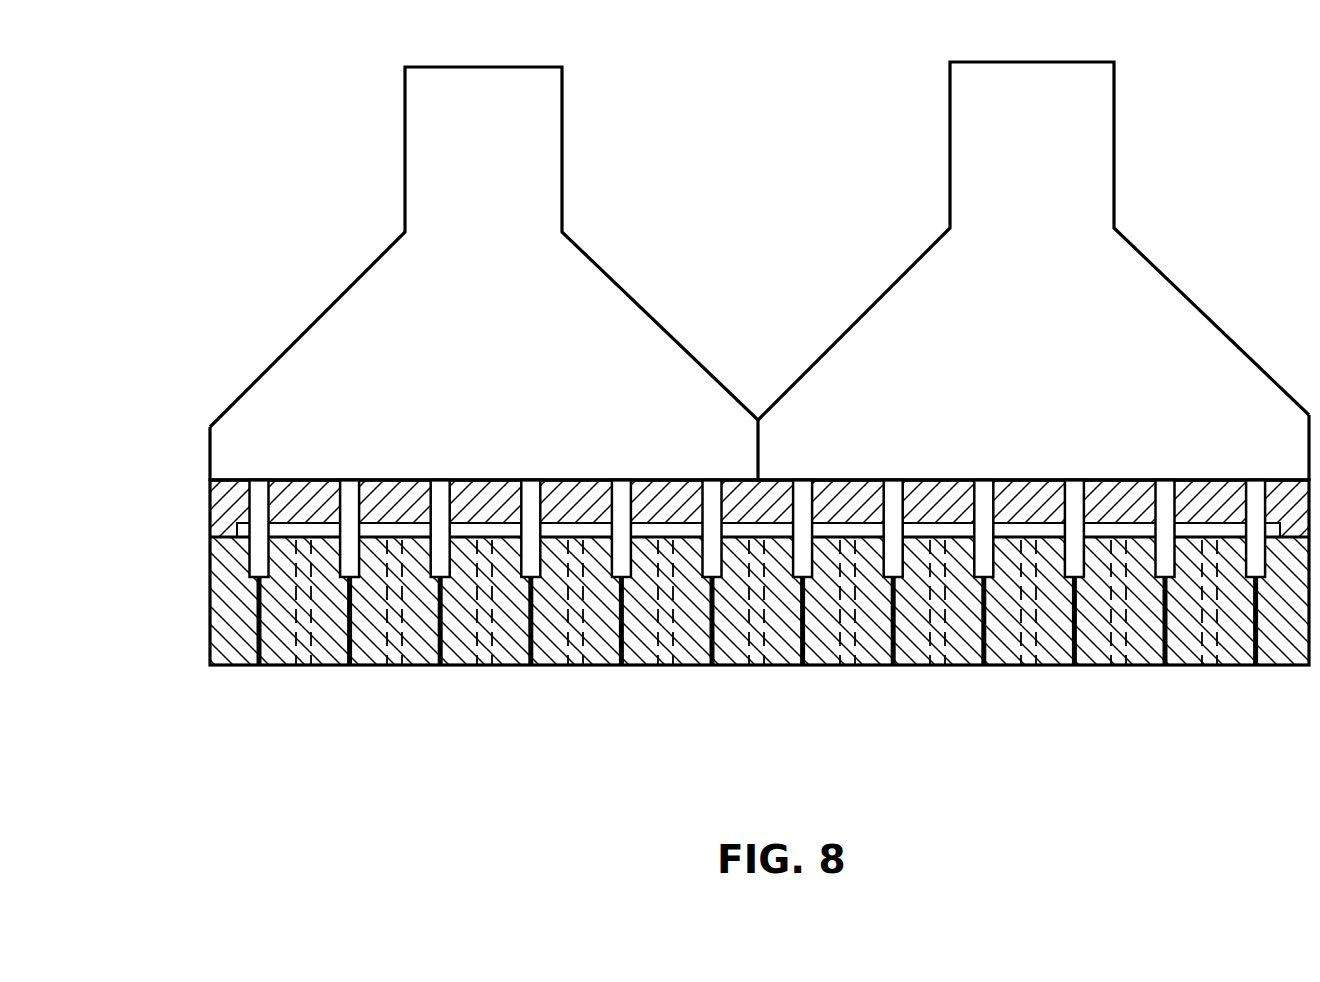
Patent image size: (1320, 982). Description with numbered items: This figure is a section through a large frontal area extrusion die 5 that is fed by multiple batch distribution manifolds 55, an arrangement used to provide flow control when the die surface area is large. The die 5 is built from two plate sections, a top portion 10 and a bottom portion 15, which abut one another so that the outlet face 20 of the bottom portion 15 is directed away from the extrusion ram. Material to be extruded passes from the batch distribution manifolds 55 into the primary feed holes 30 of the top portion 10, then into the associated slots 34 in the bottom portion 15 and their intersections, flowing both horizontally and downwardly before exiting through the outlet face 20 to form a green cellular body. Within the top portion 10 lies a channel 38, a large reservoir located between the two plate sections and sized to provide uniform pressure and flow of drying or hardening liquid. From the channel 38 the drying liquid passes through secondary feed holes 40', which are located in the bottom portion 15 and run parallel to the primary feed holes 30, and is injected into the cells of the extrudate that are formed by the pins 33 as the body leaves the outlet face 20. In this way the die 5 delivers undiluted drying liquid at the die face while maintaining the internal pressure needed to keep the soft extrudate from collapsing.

The die 5 is at (683, 419).
The top portion 10 is at (719, 487).
The bottom portion 15 is at (712, 604).
The outlet face 20 is at (712, 586).
The primary feed holes 30 is at (620, 482).
The pins 33 is at (695, 663).
The slots 34 is at (988, 632).
The channel 38 is at (1190, 522).
The secondary feed holes 40' is at (756, 634).
The batch distribution manifolds 55 is at (513, 66).